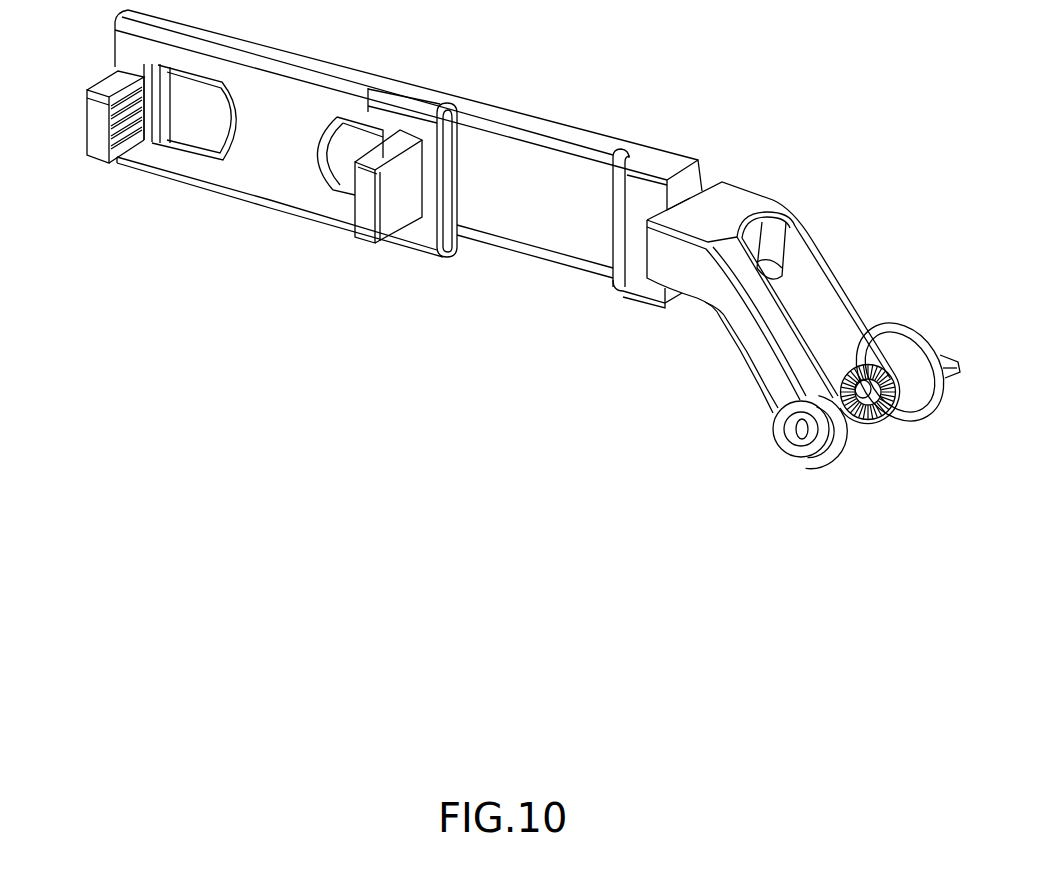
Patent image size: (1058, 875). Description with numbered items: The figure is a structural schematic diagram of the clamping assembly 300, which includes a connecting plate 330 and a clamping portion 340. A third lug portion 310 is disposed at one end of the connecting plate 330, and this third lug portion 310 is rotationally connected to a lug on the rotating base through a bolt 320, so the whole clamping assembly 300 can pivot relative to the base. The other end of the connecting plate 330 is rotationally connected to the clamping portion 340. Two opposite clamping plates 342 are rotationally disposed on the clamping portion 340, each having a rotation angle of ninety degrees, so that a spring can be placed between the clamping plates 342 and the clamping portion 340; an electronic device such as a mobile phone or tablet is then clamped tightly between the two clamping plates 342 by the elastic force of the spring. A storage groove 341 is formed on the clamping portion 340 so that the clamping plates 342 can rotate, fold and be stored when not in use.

The clamping assembly 300 is at (557, 84).
The third lug portion 310 is at (820, 278).
The bolt 320 is at (860, 383).
The connecting plate 330 is at (725, 195).
The clamping portion 340 is at (409, 80).
The storage groove 341 is at (200, 143).
The clamping plates 342 is at (87, 160).